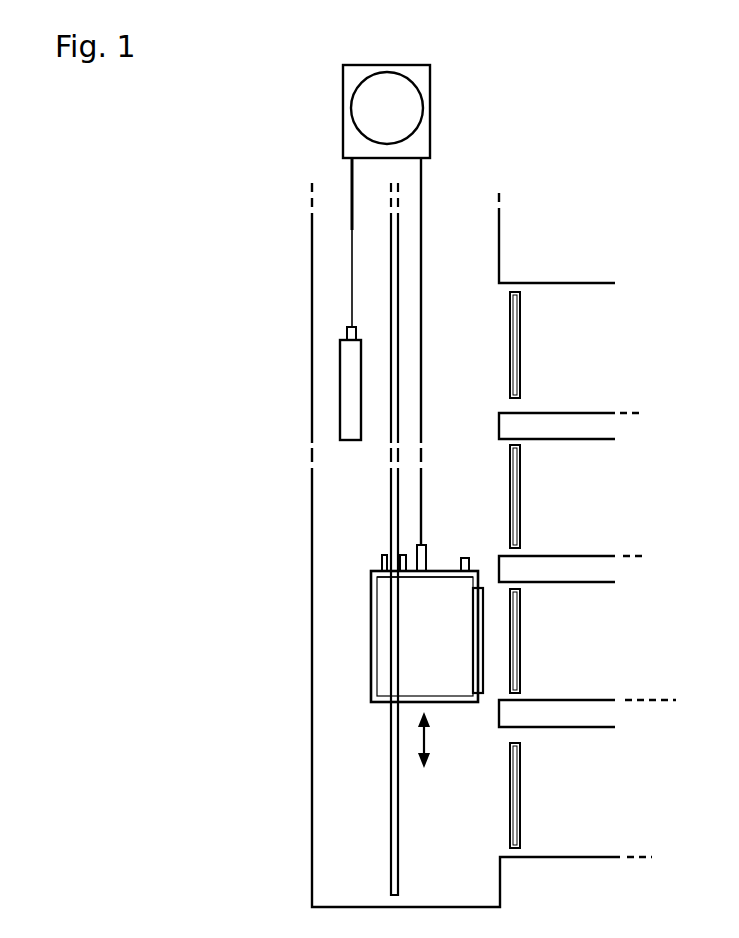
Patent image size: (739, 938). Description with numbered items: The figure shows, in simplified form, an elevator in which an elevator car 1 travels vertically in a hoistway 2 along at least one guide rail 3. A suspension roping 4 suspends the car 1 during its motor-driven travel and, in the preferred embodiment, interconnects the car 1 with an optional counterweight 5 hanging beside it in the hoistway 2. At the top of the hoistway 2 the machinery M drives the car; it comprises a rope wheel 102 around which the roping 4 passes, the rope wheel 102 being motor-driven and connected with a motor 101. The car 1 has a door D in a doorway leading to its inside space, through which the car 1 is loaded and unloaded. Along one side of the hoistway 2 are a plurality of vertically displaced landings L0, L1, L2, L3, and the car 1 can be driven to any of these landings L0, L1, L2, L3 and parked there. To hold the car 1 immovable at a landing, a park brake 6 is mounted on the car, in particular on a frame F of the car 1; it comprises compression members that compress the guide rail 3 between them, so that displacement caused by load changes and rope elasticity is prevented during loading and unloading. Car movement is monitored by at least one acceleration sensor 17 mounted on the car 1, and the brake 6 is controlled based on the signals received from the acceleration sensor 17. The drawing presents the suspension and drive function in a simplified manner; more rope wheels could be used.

The machinery M is at (311, 49).
The motor 101 is at (414, 65).
The rope wheel 102 is at (410, 123).
The suspension roping 4 is at (352, 280).
The counterweight 5 is at (340, 355).
The guide rail 3 is at (389, 510).
The acceleration sensor 17 is at (466, 557).
The elevator car 1 is at (371, 640).
The park brake 6 is at (382, 562).
The frame F is at (433, 576).
The door D is at (474, 650).
The hoistway 2 is at (349, 785).
The landing L0 is at (574, 797).
The landing L1 is at (587, 658).
The landing L2 is at (572, 513).
The landing L3 is at (570, 365).